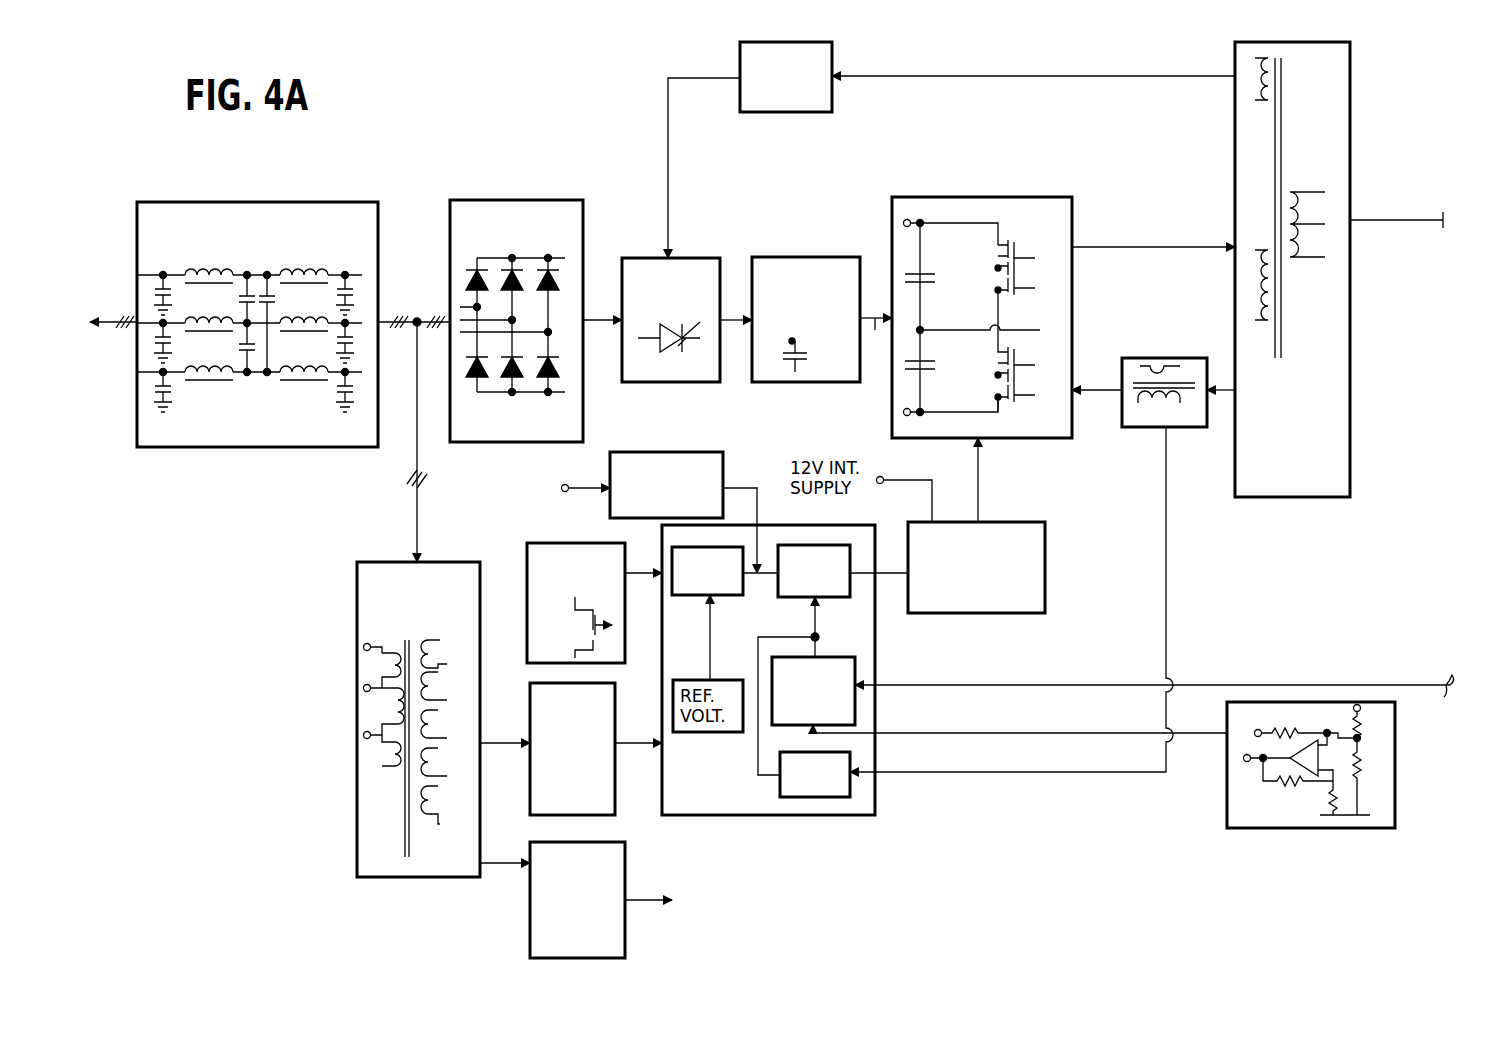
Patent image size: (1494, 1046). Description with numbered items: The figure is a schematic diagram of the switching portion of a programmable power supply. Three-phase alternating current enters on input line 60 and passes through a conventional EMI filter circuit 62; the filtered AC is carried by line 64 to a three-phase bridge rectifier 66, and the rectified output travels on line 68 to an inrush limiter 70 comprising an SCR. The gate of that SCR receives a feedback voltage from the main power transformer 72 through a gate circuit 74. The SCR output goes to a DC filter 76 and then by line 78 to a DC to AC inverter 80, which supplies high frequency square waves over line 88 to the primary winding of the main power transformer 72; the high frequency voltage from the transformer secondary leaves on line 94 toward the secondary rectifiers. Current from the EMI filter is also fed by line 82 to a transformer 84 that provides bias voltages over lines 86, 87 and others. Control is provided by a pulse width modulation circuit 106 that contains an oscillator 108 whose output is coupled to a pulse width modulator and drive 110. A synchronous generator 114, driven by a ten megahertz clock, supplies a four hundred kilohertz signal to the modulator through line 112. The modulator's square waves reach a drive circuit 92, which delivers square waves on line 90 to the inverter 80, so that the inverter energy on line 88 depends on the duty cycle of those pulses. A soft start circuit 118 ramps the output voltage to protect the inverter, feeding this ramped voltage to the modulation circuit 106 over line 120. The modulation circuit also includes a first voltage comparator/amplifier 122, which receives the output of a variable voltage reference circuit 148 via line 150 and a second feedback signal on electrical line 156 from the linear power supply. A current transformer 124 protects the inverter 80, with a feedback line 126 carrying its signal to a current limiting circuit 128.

The input line 60 is at (140, 330).
The EMI filter circuit 62 is at (331, 203).
The line 64 is at (420, 318).
The 3 phase bridge rectifier 66 is at (564, 204).
The line 68 is at (601, 316).
The inrush limiter 70 is at (715, 258).
The main power transformer 72 is at (1340, 100).
The gate circuit 74 is at (832, 60).
The DC filter 76 is at (804, 256).
The line 78 is at (876, 334).
The DC to AC inverter 80 is at (1060, 228).
The line 82 is at (410, 460).
The transformer 84 is at (356, 648).
The line 86 is at (506, 744).
The line 87 is at (506, 862).
The line 88 is at (1140, 246).
The line 90 is at (978, 493).
The drive circuit 92 is at (1004, 614).
The line 94 is at (1376, 220).
The pulse width modulation circuit 106 is at (694, 816).
The oscillator 108 is at (720, 594).
The pulse width modulator and drive 110 is at (836, 596).
The line 112 is at (736, 482).
The synchronous generator 114 is at (692, 454).
The soft start circuit 118 is at (540, 618).
The line 120 is at (636, 570).
The voltage comparator/amplifier 122 is at (862, 672).
The current transformer 124 is at (1147, 428).
The feedback line 126 is at (1166, 600).
The current limiting circuit 128 is at (780, 790).
The variable voltage reference circuit 148 is at (1230, 814).
The line 150 is at (1052, 732).
The electrical line 156 is at (1064, 684).